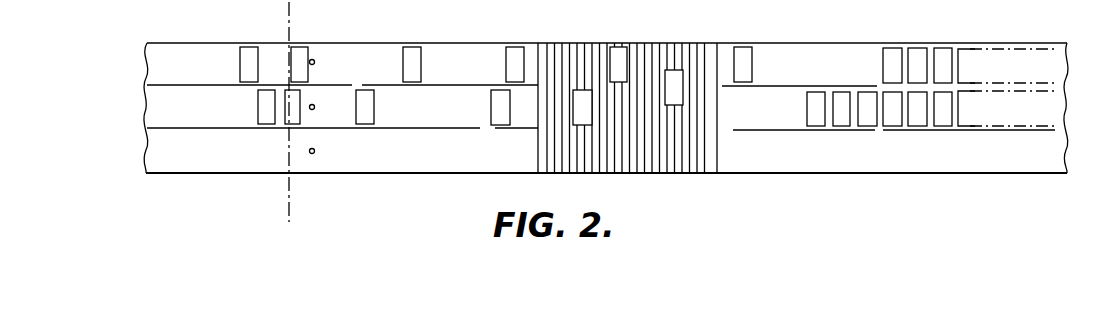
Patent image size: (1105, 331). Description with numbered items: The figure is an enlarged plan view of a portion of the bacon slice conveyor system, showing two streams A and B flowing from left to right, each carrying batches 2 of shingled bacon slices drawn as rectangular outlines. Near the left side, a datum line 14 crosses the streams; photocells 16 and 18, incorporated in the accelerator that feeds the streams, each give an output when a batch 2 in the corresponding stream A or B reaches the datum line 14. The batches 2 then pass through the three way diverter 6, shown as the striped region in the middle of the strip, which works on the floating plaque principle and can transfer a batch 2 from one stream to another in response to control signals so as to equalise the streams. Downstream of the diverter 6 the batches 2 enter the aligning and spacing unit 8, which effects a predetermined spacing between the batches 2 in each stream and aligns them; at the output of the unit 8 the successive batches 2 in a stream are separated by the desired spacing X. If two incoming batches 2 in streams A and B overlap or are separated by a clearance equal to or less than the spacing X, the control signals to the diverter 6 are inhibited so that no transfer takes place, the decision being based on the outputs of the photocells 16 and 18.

The batches 2 is at (301, 47).
The three way diverter 6 is at (674, 36).
The aligning and spacing unit 8 is at (938, 175).
The datum line 14 is at (289, 203).
The photocell 16 is at (315, 62).
The photocell 18 is at (313, 110).
The desired spacing X is at (903, 127).
The stream A is at (120, 62).
The stream B is at (115, 107).